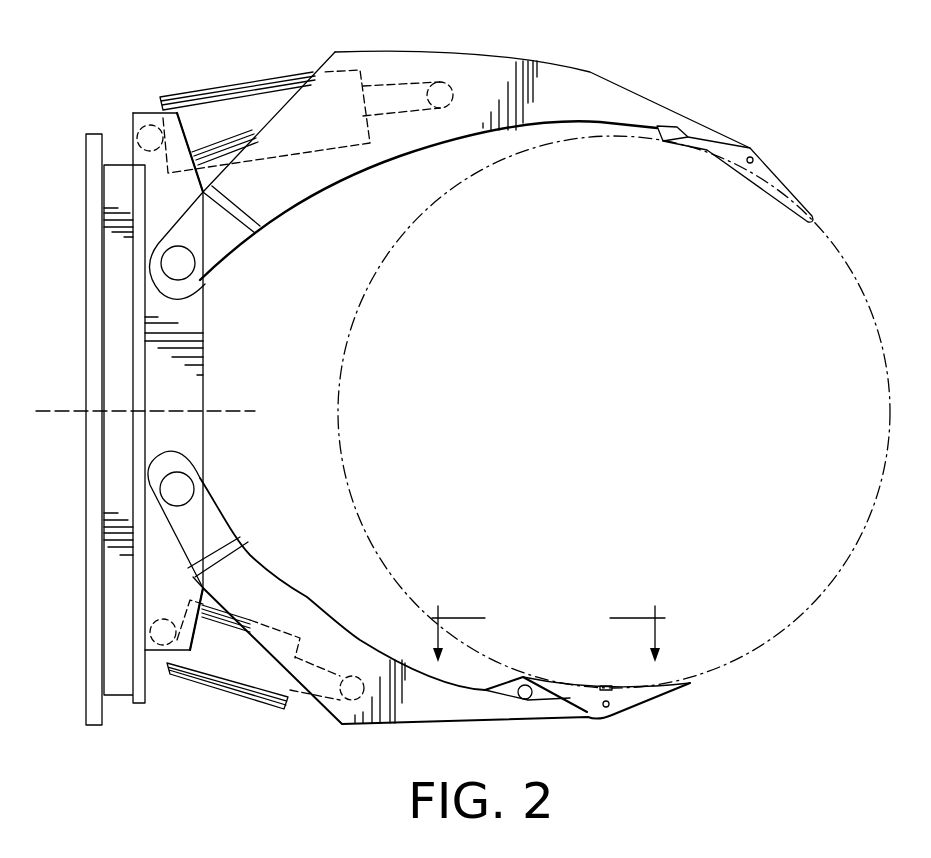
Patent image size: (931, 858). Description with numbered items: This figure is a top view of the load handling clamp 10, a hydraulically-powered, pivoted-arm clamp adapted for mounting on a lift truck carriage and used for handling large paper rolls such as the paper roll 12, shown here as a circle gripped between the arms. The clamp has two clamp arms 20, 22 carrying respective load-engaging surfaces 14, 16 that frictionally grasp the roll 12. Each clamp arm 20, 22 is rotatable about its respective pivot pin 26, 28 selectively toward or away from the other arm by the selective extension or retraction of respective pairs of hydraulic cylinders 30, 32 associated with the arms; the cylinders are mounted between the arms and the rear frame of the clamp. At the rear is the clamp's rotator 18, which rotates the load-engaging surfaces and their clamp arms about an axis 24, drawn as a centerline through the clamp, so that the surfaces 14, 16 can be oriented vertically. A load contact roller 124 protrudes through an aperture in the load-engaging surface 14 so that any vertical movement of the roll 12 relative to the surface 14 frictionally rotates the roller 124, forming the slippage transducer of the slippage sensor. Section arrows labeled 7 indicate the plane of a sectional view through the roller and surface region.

The load handling clamp 10 is at (690, 68).
The paper roll 12 is at (868, 288).
The load-engaging surface 14 is at (560, 678).
The load-engaging surface 16 is at (785, 200).
The rotator 18 is at (117, 164).
The clamp arm 20 is at (413, 725).
The clamp arm 22 is at (510, 58).
The axis 24 is at (62, 410).
The pivot pin 26 is at (182, 489).
The pivot pin 28 is at (182, 266).
The hydraulic cylinders 30 is at (213, 685).
The hydraulic cylinders 32 is at (234, 90).
The load contact roller 124 is at (607, 686).
The section line 7- 7 is at (547, 620).